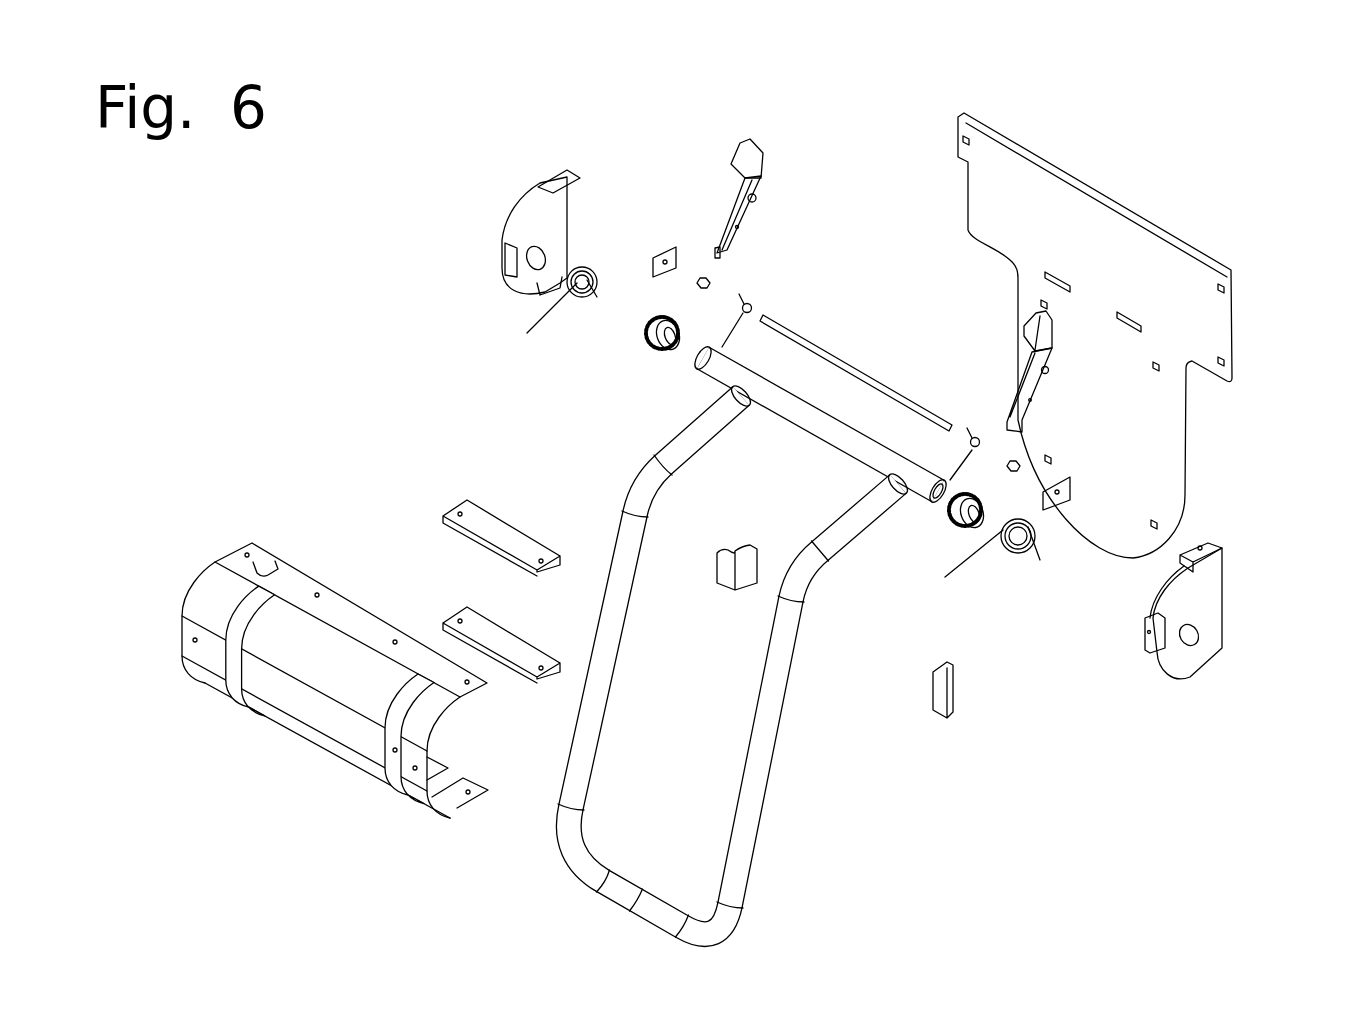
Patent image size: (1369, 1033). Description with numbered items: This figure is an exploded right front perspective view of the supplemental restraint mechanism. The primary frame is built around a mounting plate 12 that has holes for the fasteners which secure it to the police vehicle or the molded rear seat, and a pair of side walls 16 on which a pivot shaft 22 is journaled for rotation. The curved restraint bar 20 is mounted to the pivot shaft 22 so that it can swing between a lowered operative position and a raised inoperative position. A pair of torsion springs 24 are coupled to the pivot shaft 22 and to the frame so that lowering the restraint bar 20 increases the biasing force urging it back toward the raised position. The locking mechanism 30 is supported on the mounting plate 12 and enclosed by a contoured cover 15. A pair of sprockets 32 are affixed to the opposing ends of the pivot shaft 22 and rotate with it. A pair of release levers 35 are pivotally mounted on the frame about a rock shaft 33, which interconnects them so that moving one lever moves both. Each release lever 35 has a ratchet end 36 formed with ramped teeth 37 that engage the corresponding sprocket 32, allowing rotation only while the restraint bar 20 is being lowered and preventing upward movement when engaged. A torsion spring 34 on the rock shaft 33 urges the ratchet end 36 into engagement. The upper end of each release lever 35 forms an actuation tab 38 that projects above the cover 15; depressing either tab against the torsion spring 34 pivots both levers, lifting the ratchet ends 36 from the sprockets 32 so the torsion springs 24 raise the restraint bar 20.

The mounting plate 12 is at (1085, 233).
The contoured cover 15 is at (305, 586).
The side walls 16 is at (530, 213).
The curved restraint bar 20 is at (752, 808).
The pivot shaft 22 is at (847, 447).
The torsion springs 24 is at (595, 275).
The locking mechanism 30 is at (556, 128).
The sprockets 32 is at (650, 340).
The rock shaft 33 is at (847, 365).
The torsion spring 34 is at (752, 309).
The release levers 35 is at (1052, 347).
The ratchet end 36 is at (718, 252).
The ramped teeth 37 is at (718, 255).
The actuation tab 38 is at (755, 147).